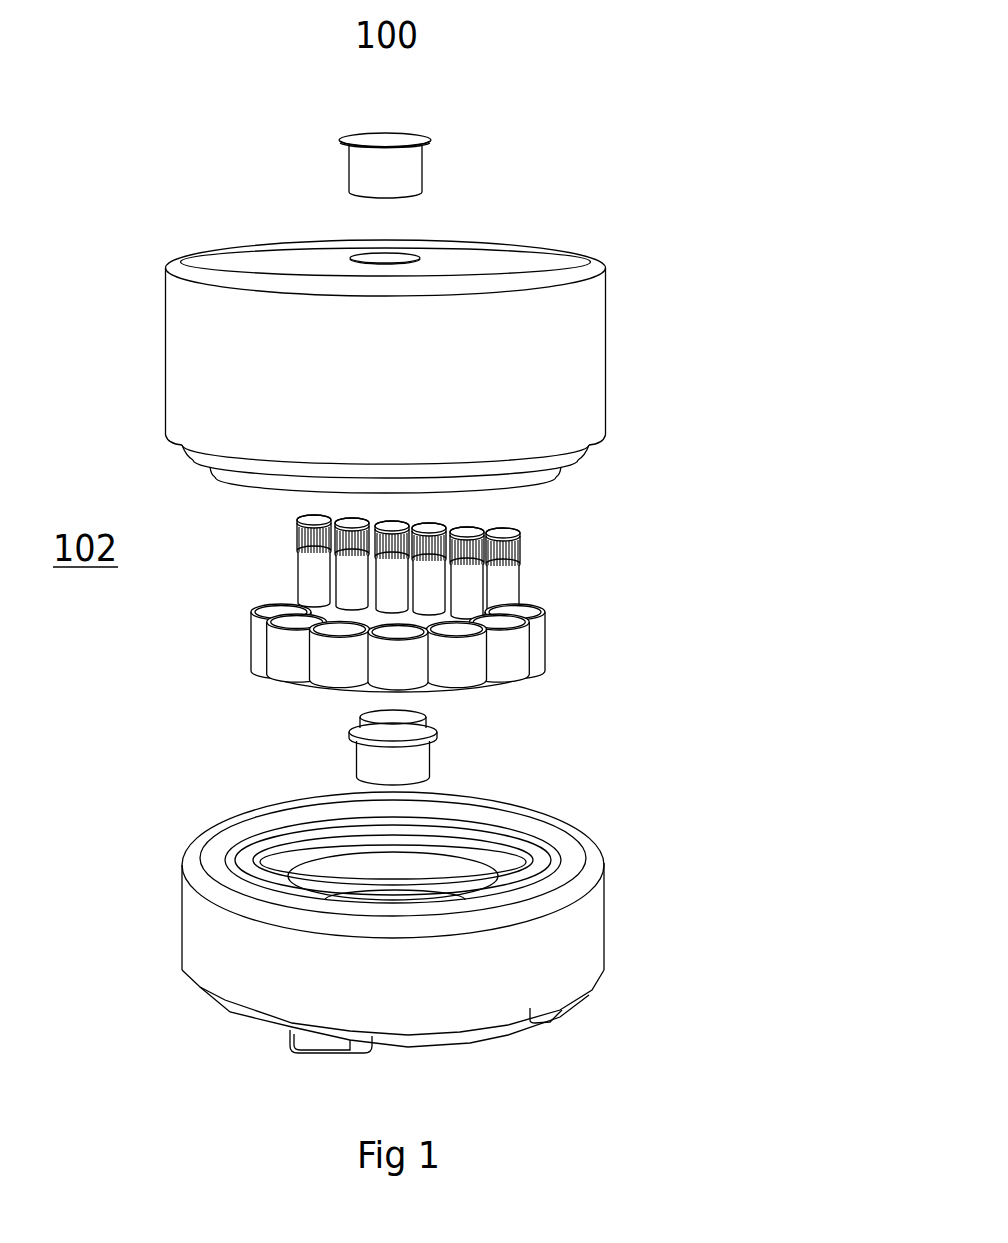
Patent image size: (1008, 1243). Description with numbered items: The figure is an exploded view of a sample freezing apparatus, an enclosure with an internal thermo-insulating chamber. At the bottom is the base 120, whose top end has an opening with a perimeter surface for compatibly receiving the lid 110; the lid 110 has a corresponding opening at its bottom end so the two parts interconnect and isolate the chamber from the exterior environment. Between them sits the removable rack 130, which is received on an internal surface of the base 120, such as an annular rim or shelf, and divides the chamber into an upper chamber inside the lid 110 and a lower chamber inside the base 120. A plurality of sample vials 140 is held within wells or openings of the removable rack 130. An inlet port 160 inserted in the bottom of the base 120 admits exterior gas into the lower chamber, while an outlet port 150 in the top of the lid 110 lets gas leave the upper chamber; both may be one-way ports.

The lid 110 is at (504, 370).
The base 120 is at (580, 944).
The removable rack 130 is at (499, 649).
The sample vials 140 is at (498, 581).
The outlet port 150 is at (417, 168).
The inlet port 160 is at (437, 758).